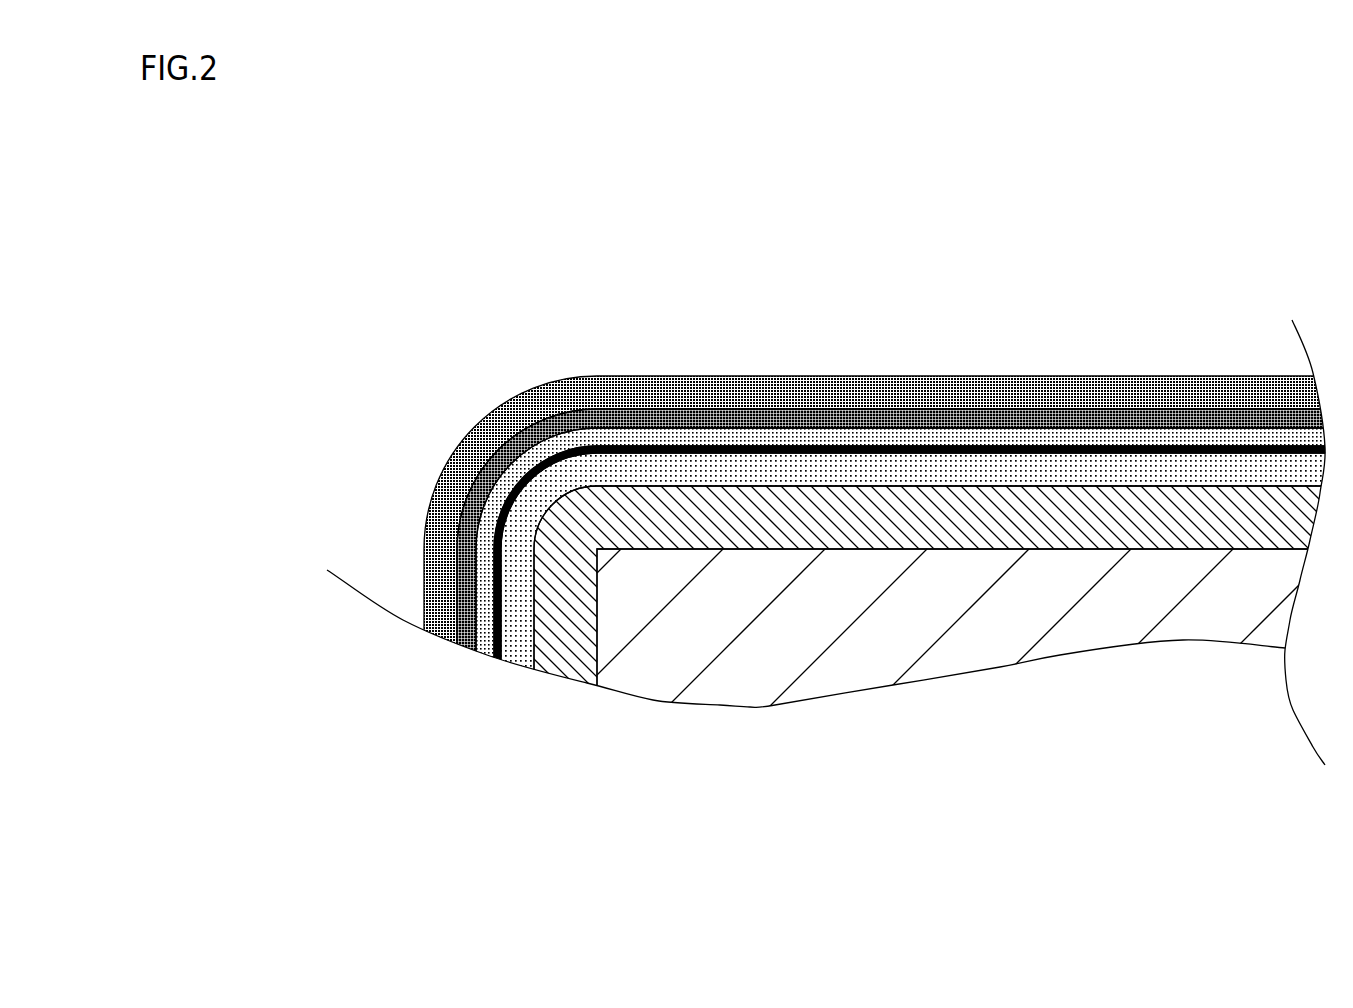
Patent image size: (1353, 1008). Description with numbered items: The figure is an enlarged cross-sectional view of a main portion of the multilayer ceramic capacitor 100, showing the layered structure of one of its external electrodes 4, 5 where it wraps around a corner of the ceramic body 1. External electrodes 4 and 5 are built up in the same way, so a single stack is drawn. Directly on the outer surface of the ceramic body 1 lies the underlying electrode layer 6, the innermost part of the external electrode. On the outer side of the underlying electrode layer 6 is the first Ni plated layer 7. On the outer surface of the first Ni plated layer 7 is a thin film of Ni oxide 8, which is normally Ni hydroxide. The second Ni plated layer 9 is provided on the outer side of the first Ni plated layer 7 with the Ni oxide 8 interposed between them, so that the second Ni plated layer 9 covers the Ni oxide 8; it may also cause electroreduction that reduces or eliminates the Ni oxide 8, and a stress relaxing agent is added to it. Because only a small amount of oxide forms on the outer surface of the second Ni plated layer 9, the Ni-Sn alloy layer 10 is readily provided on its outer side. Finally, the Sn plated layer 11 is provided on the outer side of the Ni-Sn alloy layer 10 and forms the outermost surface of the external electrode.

The multilayer ceramic capacitor 100 is at (389, 188).
The ceramic body 1 is at (971, 639).
The external electrode 4 is at (776, 568).
The external electrode 5 is at (776, 568).
The underlying electrode layer 6 is at (776, 580).
The first Ni plated layer 7 is at (923, 591).
The Ni oxide 8 is at (919, 588).
The second Ni plated layer 9 is at (910, 579).
The Ni-Sn alloy layer 10 is at (901, 569).
The Sn plated layer 11 is at (884, 553).